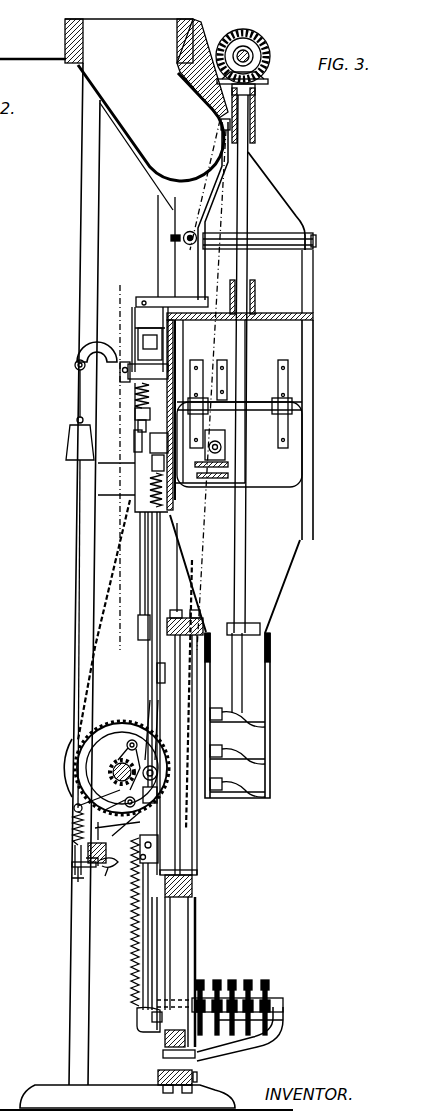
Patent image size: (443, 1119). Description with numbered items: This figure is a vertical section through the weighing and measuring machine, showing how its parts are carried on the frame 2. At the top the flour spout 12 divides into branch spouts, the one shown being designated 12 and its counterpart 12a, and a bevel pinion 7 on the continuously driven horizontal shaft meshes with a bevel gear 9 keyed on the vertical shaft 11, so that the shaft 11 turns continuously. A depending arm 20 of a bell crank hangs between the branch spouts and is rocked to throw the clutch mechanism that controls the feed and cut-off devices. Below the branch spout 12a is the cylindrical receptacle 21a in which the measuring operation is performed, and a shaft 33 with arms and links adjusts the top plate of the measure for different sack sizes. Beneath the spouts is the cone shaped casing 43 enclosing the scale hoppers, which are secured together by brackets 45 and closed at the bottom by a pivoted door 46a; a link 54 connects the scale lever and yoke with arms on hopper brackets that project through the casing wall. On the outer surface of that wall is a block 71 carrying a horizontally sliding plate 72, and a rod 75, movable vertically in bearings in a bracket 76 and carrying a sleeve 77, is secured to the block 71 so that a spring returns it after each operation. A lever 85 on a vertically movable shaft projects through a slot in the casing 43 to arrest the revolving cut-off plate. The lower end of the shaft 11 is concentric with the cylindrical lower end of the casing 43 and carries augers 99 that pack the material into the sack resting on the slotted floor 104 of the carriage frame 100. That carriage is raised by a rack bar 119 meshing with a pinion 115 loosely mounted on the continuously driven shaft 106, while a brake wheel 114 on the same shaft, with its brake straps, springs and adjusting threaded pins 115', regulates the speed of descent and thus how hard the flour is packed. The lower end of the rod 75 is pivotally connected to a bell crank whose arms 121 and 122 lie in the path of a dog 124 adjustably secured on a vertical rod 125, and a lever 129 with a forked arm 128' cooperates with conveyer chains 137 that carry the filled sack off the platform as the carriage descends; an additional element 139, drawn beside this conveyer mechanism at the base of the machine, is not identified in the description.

The frame 2 is at (78, 535).
The bevel pinion 7 is at (262, 48).
The bevel gear 9 is at (268, 82).
The shaft 11 is at (246, 152).
The flour spout 12 is at (146, 158).
The branch spout 12a is at (270, 198).
The depending arm 20 is at (216, 194).
The cylindrical receptacle 21a is at (296, 273).
The shaft 33 is at (184, 242).
The cone shaped casing 43 is at (298, 510).
The brackets 45 is at (201, 356).
The pivoted door 46a is at (239, 444).
The link 54 is at (216, 478).
The block 71 is at (160, 443).
The plate 72 is at (136, 437).
The rod 75 is at (152, 647).
The bracket 76 is at (146, 530).
The sleeve 77 is at (156, 463).
The lever 85 is at (144, 302).
The augers 99 is at (265, 727).
The frame 100 is at (180, 950).
The slotted floor 104 is at (278, 991).
The continuously driven shaft 106 is at (112, 775).
The brake wheel 114 is at (95, 752).
The pinion 115 is at (72, 765).
The adjusting threaded pins 115' is at (64, 878).
The rack bar 119 is at (133, 915).
The arm 121 is at (124, 742).
The arm 122 is at (108, 790).
The dog 124 is at (152, 833).
The vertical rod 125 is at (150, 928).
The forked arm 128' is at (128, 1031).
The lever 129 is at (255, 997).
The conveyer chains 137 is at (268, 990).
The pipe 139 is at (286, 1027).